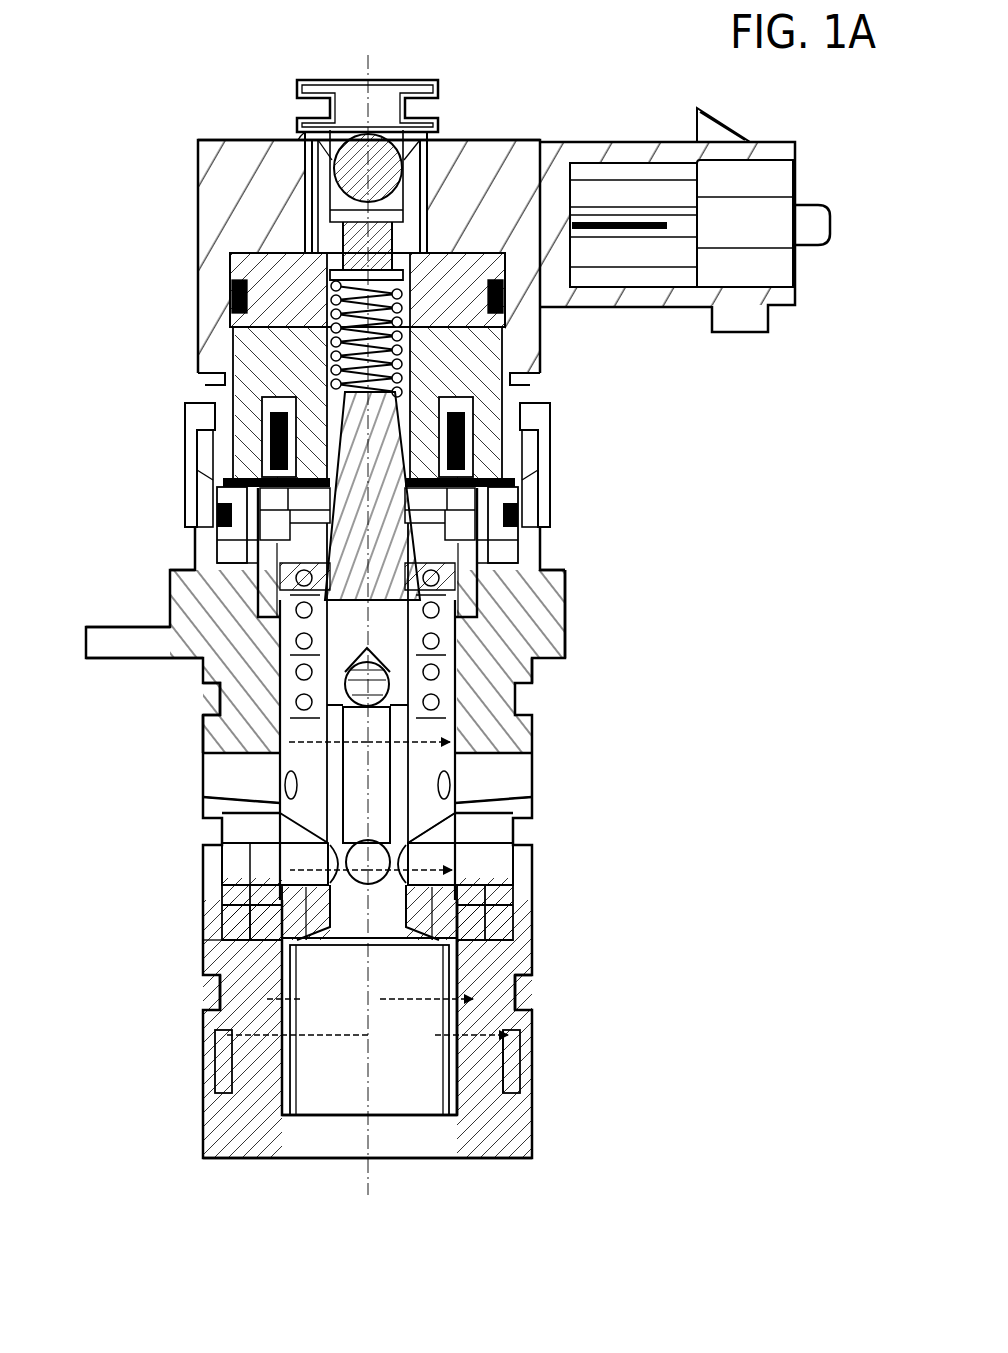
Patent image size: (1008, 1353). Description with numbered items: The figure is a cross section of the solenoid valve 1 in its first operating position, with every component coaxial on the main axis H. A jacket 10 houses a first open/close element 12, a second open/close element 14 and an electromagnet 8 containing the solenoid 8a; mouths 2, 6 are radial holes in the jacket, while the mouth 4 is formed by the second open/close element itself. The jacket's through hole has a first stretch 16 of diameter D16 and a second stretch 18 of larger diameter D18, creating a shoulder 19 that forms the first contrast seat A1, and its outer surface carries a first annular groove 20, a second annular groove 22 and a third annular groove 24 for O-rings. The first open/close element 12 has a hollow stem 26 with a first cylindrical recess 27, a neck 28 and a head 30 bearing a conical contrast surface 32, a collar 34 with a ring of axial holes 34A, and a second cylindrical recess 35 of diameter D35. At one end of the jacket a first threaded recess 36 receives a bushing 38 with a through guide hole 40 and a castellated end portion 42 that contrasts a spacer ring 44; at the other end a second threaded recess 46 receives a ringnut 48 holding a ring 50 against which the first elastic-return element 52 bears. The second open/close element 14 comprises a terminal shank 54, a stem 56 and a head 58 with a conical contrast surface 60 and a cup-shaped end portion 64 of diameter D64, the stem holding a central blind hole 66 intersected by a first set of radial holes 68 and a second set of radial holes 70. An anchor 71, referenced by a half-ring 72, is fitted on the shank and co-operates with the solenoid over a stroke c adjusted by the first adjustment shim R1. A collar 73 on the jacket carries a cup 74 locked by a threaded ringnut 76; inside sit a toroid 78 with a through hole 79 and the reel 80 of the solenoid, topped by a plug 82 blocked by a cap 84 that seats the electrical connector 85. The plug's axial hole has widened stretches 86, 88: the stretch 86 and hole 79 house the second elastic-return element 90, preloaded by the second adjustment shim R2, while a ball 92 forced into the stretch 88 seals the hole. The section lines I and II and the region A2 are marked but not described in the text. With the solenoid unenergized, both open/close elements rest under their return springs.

The solenoid valve 1 is at (728, 494).
The mouth 2 is at (225, 800).
The mouth 4 is at (392, 1100).
The mouth 6 is at (240, 900).
The electromagnet 8 is at (265, 405).
The solenoid 8a is at (535, 440).
The jacket 10 is at (565, 600).
The first open/close element 12 is at (560, 612).
The second open/close element 14 is at (280, 640).
The first stretch 16 is at (218, 700).
The second stretch 18 is at (230, 1000).
The shoulder 19 is at (210, 795).
The first annular groove 20 is at (520, 992).
The second annular groove 22 is at (515, 838).
The third annular groove 24 is at (540, 690).
The stem 26 is at (205, 740).
The first cylindrical recess 27 is at (560, 590).
The neck 28 is at (520, 775).
The head 30 is at (205, 820).
The conical contrast surface 32 is at (520, 810).
The collar 34 is at (250, 920).
The ring of axial holes 34A is at (490, 905).
The second cylindrical recess 35 is at (470, 860).
The first threaded recess 36 is at (525, 1075).
The bushing 38 is at (520, 1140).
The through guide hole 40 is at (337, 1145).
The castellated end portion 42 is at (540, 978).
The spacer ring 44 is at (470, 935).
The second threaded recess 46 is at (300, 600).
The ringnut 48 is at (552, 500).
The ring 50 is at (258, 560).
The first elastic-return element 52 is at (470, 600).
The terminal shank 54 is at (290, 400).
The stem 56 is at (224, 503).
The head 58 is at (500, 1100).
The conical contrast surface 60 is at (470, 885).
The cup-shaped end portion 64 is at (432, 1092).
The central blind hole 66 is at (380, 783).
The first set of radial holes 68 is at (240, 880).
The second set of radial holes 70 is at (392, 682).
The anchor 71 is at (530, 432).
The half-ring 72 is at (208, 432).
The collar 73 is at (217, 525).
The cup 74 is at (540, 390).
The threaded ringnut 76 is at (198, 400).
The toroid 78 is at (245, 290).
The through hole 79 is at (262, 360).
The reel 80 is at (505, 360).
The plug 82 is at (262, 150).
The cap 84 is at (388, 160).
The electrical connector 85 is at (628, 185).
The first stretch with widened diameter 86 is at (378, 250).
The second stretch with widened diameter 88 is at (310, 125).
The second elastic-return element 90 is at (300, 280).
The ball 92 is at (356, 125).
The main axis H is at (372, 75).
The section line I is at (500, 498).
The section line II is at (320, 857).
The first contrast seat A1 is at (205, 760).
The area A2 is at (215, 945).
The first adjustment shim R1 is at (548, 560).
The second adjustment shim R2 is at (300, 215).
The stroke c is at (245, 489).
The first diameter D16 is at (470, 742).
The diameter of second stretch D18 is at (367, 1027).
The diameter of second cylindrical recess D35 is at (480, 870).
The outer diameter of cup-shaped end portion D64 is at (369, 991).